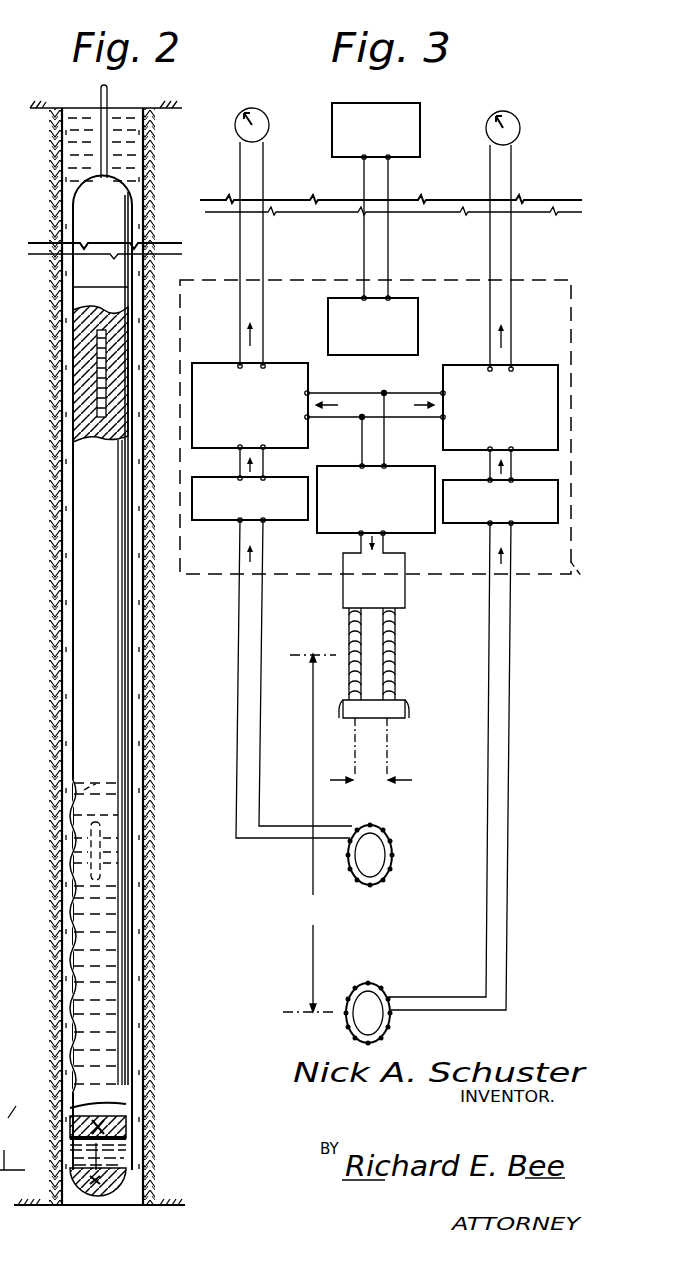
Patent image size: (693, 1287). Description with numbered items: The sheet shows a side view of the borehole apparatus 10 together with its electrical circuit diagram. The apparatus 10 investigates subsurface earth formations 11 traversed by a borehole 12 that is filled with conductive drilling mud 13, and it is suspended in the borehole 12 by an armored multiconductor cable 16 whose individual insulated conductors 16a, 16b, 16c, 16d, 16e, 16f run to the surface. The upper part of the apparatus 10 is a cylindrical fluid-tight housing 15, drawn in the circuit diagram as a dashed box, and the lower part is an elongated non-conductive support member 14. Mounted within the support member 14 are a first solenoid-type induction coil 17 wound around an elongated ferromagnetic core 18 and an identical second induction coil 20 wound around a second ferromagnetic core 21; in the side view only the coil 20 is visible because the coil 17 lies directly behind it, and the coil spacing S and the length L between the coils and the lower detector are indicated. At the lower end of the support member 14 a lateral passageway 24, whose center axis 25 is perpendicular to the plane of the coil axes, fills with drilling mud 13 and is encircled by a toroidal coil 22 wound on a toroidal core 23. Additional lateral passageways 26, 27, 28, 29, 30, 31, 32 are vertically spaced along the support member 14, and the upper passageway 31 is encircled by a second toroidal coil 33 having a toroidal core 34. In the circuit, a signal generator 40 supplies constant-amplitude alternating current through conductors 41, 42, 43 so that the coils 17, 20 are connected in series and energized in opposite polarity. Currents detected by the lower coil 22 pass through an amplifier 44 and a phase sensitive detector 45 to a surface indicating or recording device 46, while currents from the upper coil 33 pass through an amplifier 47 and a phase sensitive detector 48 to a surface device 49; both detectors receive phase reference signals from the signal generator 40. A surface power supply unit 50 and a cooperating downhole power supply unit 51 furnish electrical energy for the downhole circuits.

In FIG. 2, the apparatus 10 is at (66, 627).
In FIG. 2, the subsurface earth formations 11 is at (46, 598).
In FIG. 2, the borehole 12 is at (62, 516).
In FIG. 2, the drilling mud 13 is at (70, 150).
In FIG. 2, the support member 14 is at (72, 699).
In FIG. 2, the fluid-tight housing 15 is at (86, 271).
In FIG. 3, the fluid-tight housing 15 is at (391, 445).
In FIG. 2, the armored multiconductor cable 16 is at (110, 99).
In FIG. 3, the conductor 16a is at (239, 232).
In FIG. 3, the conductor 16b is at (263, 262).
In FIG. 3, the conductor 16c is at (363, 232).
In FIG. 3, the conductor 16d is at (389, 262).
In FIG. 3, the conductor 16e is at (491, 232).
In FIG. 3, the conductor 16f is at (519, 262).
In FIG. 3, the induction coil 17 is at (348, 630).
In FIG. 3, the ferromagnetic core 18 is at (352, 720).
In FIG. 2, the second induction coil 20 is at (100, 385).
In FIG. 3, the second induction coil 20 is at (396, 630).
In FIG. 2, the second ferromagnetic core 21 is at (100, 328).
In FIG. 3, the second ferromagnetic core 21 is at (398, 707).
In FIG. 3, the toroidal coil 22 is at (390, 1016).
In FIG. 2, the toroidal core 23 is at (112, 1131).
In FIG. 3, the toroidal core 23 is at (350, 1035).
In FIG. 2, the lateral passageway 24 is at (112, 1168).
In FIG. 2, the longitudinal center axis of passageway 25 is at (148, 1158).
In FIG. 2, the additional lateral passageway 26 is at (108, 1108).
In FIG. 2, the additional lateral passageway 27 is at (58, 1045).
In FIG. 2, the additional lateral passageway 28 is at (58, 997).
In FIG. 2, the additional lateral passageway 29 is at (58, 949).
In FIG. 2, the additional lateral passageway 30 is at (58, 893).
In FIG. 2, the upper lateral passageway 31 is at (56, 833).
In FIG. 2, the additional lateral passageway 32 is at (58, 791).
In FIG. 3, the toroidal coil 33 is at (384, 836).
In FIG. 2, the toroidal core 34 is at (58, 857).
In FIG. 3, the toroidal core 34 is at (384, 872).
In FIG. 3, the signal generator 40 is at (406, 466).
In FIG. 3, the conductor 41 is at (342, 596).
In FIG. 3, the conductor 42 is at (400, 722).
In FIG. 3, the conductor 43 is at (404, 596).
In FIG. 3, the amplifier 44 is at (538, 526).
In FIG. 3, the phase sensitive detector 45 is at (545, 364).
In FIG. 3, the indicating or recording device 46 is at (510, 110).
In FIG. 3, the amplifier 47 is at (217, 524).
In FIG. 3, the phase sensitive detector 48 is at (286, 361).
In FIG. 3, the indicating or recording device 49 is at (258, 104).
In FIG. 3, the power supply unit 50 is at (402, 103).
In FIG. 3, the power supply unit 51 is at (418, 326).
In FIG. 3, the coil spacing S is at (371, 754).
In FIG. 3, the coil separation length L is at (309, 833).